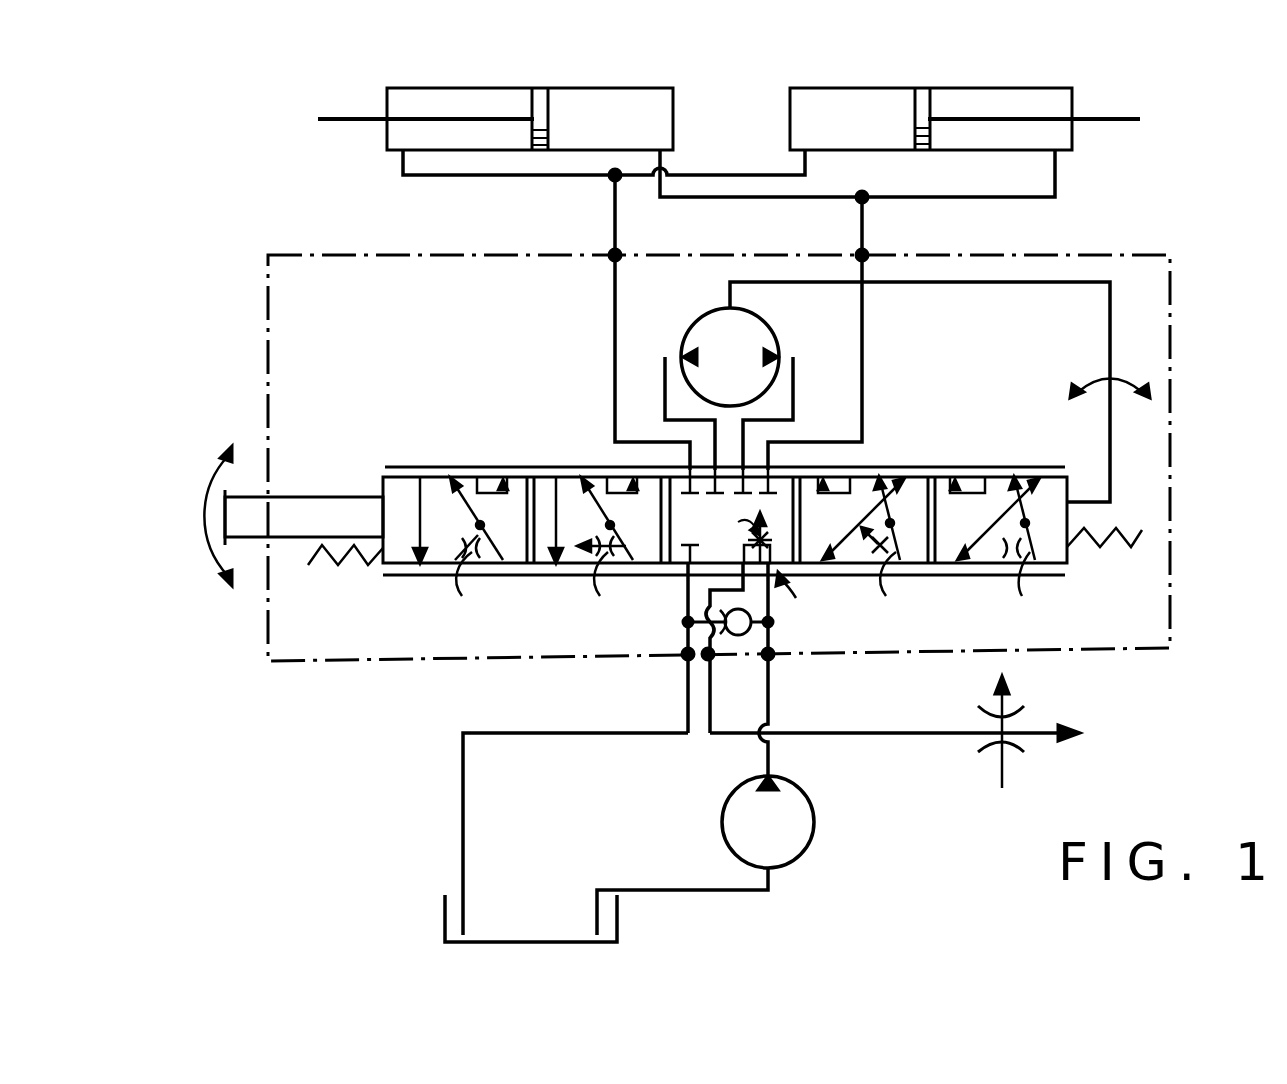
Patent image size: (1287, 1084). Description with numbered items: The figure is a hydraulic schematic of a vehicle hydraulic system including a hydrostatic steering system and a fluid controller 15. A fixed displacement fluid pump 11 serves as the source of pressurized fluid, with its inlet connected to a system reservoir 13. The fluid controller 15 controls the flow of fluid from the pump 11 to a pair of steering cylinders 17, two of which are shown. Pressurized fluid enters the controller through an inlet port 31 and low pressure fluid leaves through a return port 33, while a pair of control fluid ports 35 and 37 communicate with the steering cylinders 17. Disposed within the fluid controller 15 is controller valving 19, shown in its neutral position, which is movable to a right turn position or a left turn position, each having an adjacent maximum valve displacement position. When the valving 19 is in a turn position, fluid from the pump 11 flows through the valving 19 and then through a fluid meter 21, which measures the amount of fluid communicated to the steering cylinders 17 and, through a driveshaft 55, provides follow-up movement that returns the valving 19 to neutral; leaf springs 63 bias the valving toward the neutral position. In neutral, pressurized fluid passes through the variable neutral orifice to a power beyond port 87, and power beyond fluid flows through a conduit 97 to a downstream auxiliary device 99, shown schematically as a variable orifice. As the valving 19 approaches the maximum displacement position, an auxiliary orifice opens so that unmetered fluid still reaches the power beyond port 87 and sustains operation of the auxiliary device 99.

The fluid pump 11 is at (814, 832).
The system reservoir 13 is at (442, 915).
The fluid controller 15 is at (1184, 258).
The steering cylinders 17 is at (778, 104).
The controller valving 19 is at (478, 418).
The fluid meter 21 is at (700, 312).
The inlet port 31 is at (772, 658).
The return port 33 is at (684, 657).
The control fluid port 35 is at (613, 252).
The control fluid port 37 is at (864, 254).
The driveshaft 55 is at (955, 286).
The leaf springs 63 is at (340, 570).
The power beyond port 87 is at (711, 658).
The conduit 97 is at (836, 733).
The auxiliary device 99 is at (1040, 700).